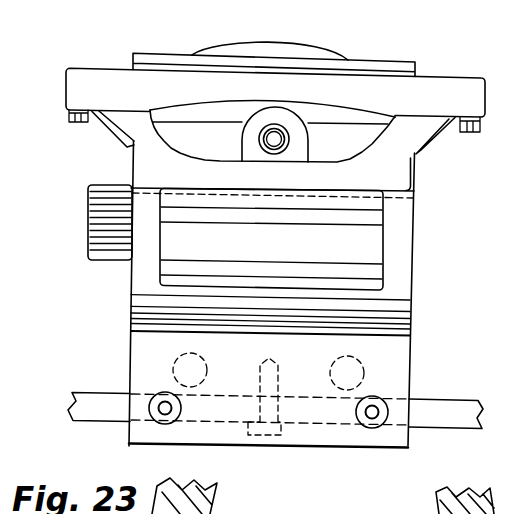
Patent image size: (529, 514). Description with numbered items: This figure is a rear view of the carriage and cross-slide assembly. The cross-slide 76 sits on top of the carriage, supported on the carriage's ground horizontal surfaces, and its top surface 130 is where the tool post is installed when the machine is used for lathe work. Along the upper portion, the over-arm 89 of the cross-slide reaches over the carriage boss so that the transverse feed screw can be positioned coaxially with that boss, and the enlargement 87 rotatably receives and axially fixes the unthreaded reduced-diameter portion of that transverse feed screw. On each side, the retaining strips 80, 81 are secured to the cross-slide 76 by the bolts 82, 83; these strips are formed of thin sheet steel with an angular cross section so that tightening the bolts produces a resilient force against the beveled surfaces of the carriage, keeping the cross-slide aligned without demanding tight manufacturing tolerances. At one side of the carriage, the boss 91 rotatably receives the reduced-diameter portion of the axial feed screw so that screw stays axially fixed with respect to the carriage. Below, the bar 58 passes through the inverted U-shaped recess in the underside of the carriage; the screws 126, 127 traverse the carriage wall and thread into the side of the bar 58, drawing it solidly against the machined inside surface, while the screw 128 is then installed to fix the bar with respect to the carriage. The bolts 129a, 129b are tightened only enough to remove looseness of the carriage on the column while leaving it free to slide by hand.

The bar 58 is at (453, 400).
The cross-slide 76 is at (488, 80).
The retaining strip 80 is at (113, 131).
The retaining strip 81 is at (445, 134).
The bolt 82 is at (70, 122).
The bolt 83 is at (482, 130).
The enlargement 87 is at (310, 141).
The over-arm 89 is at (302, 45).
The boss 91 is at (88, 232).
The screw 126 is at (372, 430).
The screw 127 is at (156, 421).
The screw 128 is at (270, 442).
The bolt 129a is at (356, 365).
The bolt 129b is at (178, 360).
The top surface 130 is at (386, 60).